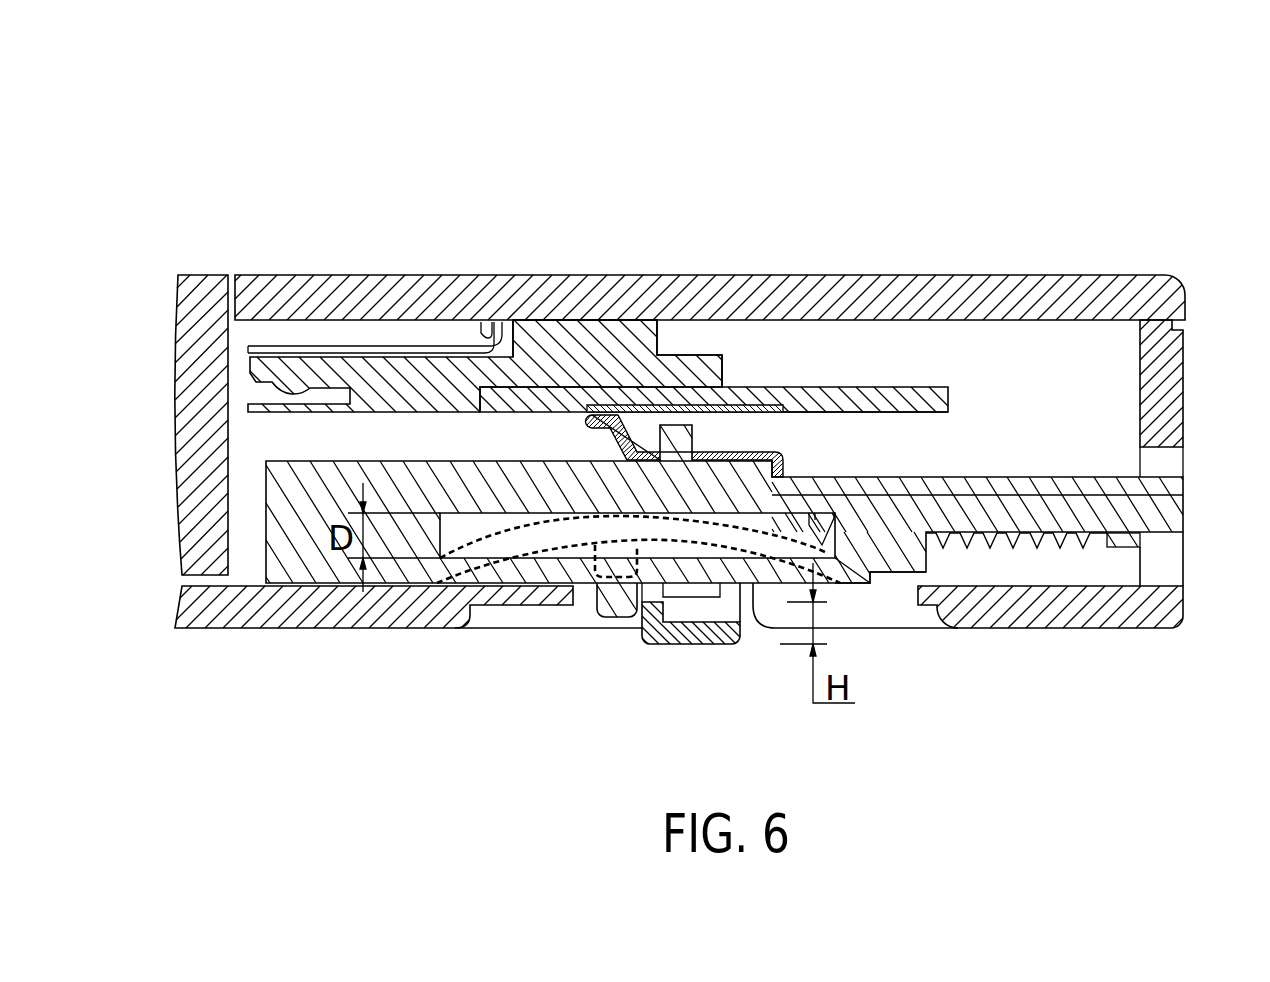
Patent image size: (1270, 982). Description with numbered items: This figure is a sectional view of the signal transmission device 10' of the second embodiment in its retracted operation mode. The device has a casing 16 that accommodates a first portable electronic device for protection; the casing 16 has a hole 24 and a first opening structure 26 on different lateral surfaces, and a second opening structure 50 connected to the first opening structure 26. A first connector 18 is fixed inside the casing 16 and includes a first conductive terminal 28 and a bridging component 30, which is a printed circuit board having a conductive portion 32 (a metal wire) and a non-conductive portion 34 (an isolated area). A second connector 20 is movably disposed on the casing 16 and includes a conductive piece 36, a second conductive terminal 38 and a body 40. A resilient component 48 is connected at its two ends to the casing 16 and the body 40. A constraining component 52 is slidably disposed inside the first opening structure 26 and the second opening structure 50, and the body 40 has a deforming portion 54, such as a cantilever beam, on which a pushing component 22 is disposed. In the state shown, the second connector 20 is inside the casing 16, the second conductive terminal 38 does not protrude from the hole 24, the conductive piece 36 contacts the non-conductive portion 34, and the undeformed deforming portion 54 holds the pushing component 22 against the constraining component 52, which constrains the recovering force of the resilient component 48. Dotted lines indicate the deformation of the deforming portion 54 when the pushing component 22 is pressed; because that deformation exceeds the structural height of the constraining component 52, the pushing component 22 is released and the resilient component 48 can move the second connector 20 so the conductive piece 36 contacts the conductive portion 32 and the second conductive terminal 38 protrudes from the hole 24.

The signal transmission device 10' is at (1155, 95).
The casing 16 is at (1185, 367).
The first connector 18 is at (591, 321).
The second connector 20 is at (872, 593).
The pushing component 22 is at (613, 605).
The hole 24 is at (1192, 465).
The first opening structure 26 is at (932, 633).
The first conductive terminal 28 is at (413, 392).
The bridging component 30 is at (900, 393).
The conductive portion 32 is at (833, 410).
The non-conductive portion 34 is at (757, 407).
The conductive piece 36 is at (625, 432).
The second conductive terminal 38 is at (1117, 488).
The body 40 is at (427, 475).
The resilient component 48 is at (1028, 542).
The second opening structure 50 is at (757, 629).
The constraining component 52 is at (700, 630).
The deforming portion 54 is at (512, 572).